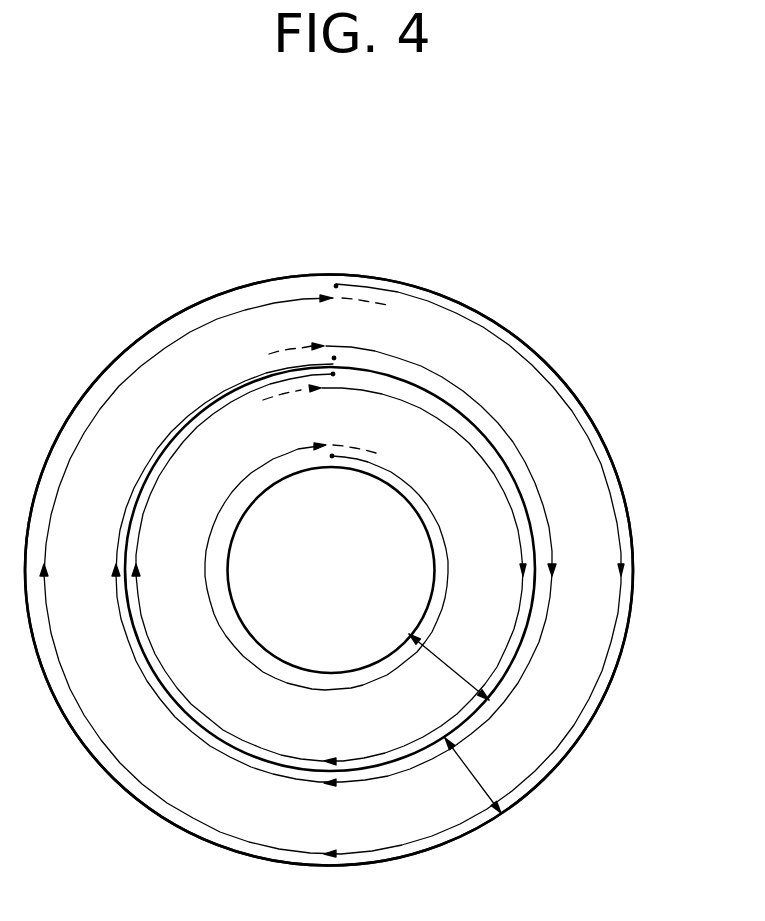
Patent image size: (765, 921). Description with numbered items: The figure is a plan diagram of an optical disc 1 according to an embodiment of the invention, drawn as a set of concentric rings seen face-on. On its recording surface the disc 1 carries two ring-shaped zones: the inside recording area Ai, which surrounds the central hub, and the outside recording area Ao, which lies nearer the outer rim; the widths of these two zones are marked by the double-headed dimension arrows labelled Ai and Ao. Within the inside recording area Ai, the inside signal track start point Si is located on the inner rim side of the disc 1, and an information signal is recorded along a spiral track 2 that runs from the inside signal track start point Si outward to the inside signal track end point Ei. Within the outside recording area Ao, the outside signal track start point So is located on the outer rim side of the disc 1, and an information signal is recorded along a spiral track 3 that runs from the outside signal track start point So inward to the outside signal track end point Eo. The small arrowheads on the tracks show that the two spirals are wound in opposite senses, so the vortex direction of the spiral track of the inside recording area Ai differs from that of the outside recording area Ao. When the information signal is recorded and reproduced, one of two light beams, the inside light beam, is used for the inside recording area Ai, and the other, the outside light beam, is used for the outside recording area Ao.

The optical disc 1 is at (456, 300).
The spiral track 2 is at (467, 437).
The spiral track 3 is at (157, 355).
The outside signal track start point So is at (336, 286).
The outside signal track end point Eo is at (334, 358).
The inside signal track end point Ei is at (333, 374).
The inside signal track start point Si is at (332, 457).
The inside recording area Ai is at (447, 664).
The outside recording area Ao is at (473, 775).